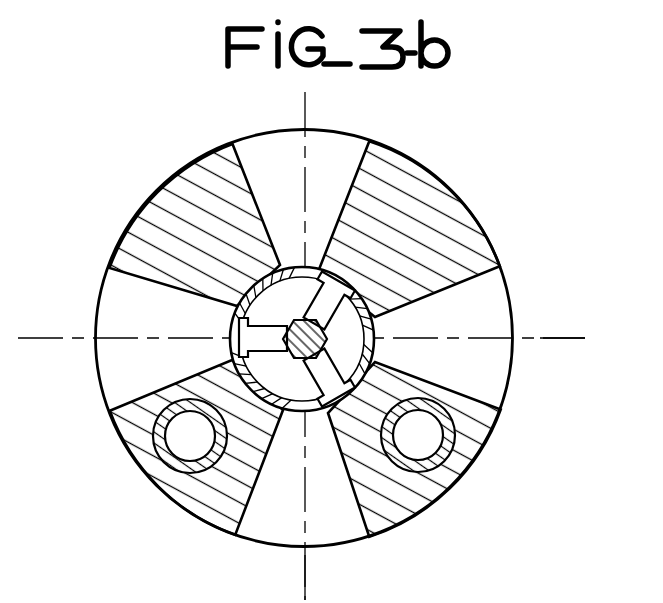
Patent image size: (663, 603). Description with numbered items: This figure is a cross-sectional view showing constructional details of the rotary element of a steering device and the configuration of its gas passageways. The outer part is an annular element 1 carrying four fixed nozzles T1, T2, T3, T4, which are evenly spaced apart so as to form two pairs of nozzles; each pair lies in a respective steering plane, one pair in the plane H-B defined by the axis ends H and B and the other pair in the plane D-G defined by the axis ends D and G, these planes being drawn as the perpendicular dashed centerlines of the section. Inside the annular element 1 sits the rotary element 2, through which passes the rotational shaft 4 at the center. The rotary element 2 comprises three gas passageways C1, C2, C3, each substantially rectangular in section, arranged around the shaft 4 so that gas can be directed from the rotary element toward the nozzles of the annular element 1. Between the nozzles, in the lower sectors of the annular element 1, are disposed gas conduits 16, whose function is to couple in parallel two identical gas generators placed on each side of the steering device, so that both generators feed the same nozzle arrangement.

The annular element 1 is at (415, 203).
The rotary element 2 is at (303, 405).
The rotational shaft 4 is at (375, 310).
The gas conduits 16 is at (178, 438).
The fixed nozzle T1 is at (357, 148).
The fixed nozzle T2 is at (492, 392).
The fixed nozzle T3 is at (258, 525).
The fixed nozzle T4 is at (112, 293).
The gas passageway C1 is at (314, 268).
The gas passageway C2 is at (333, 398).
The gas passageway C3 is at (240, 330).
The steering plane axis H is at (317, 343).
The steering plane axis G is at (301, 326).
The steering plane axis D is at (562, 359).
The steering plane axis B is at (289, 577).